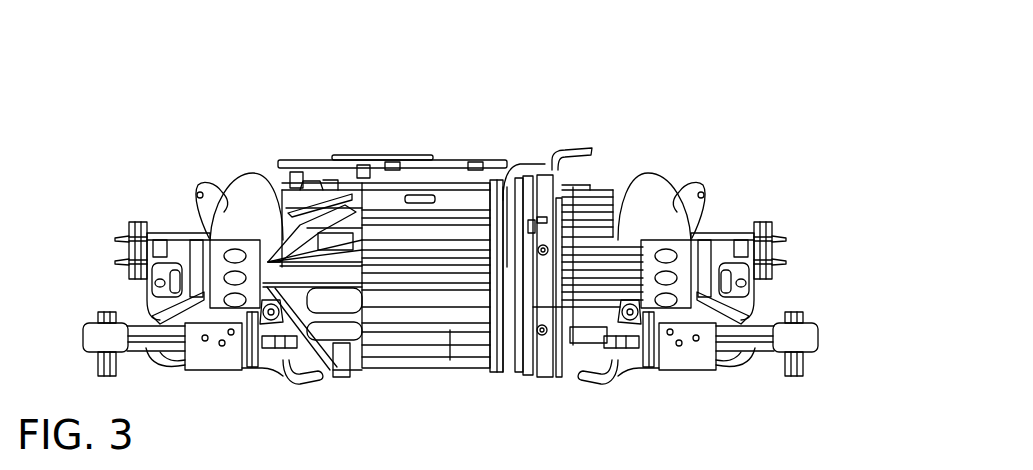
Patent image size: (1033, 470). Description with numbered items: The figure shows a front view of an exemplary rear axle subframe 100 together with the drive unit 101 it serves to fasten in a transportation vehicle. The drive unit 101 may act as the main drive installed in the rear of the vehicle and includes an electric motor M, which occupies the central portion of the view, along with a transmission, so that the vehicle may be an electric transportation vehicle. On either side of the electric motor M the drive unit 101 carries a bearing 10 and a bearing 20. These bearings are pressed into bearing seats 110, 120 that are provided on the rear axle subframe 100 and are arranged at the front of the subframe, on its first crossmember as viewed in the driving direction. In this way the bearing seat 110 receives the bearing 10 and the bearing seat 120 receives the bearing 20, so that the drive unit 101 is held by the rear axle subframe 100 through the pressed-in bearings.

The rear axle subframe 100 is at (640, 107).
The drive unit 101 is at (418, 155).
The electric motor M is at (380, 200).
The bearing 10 is at (778, 270).
The bearing 20 is at (143, 291).
The bearing seat 110 is at (684, 262).
The bearing seat 120 is at (215, 252).